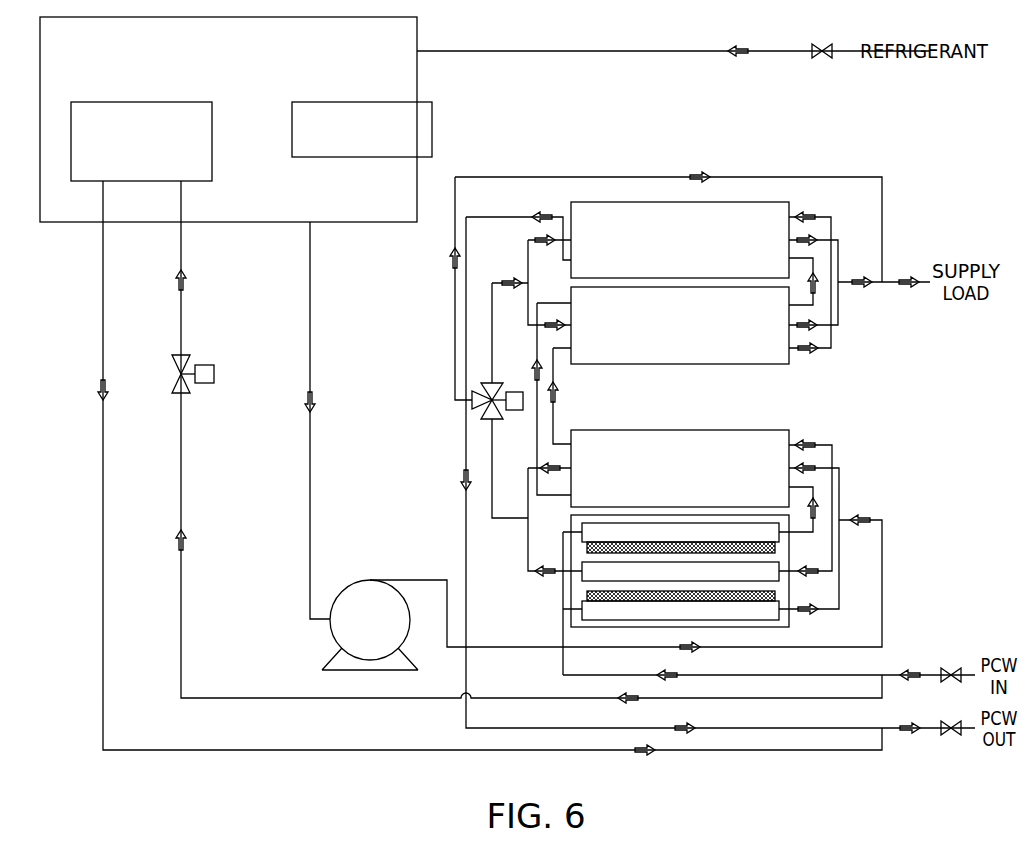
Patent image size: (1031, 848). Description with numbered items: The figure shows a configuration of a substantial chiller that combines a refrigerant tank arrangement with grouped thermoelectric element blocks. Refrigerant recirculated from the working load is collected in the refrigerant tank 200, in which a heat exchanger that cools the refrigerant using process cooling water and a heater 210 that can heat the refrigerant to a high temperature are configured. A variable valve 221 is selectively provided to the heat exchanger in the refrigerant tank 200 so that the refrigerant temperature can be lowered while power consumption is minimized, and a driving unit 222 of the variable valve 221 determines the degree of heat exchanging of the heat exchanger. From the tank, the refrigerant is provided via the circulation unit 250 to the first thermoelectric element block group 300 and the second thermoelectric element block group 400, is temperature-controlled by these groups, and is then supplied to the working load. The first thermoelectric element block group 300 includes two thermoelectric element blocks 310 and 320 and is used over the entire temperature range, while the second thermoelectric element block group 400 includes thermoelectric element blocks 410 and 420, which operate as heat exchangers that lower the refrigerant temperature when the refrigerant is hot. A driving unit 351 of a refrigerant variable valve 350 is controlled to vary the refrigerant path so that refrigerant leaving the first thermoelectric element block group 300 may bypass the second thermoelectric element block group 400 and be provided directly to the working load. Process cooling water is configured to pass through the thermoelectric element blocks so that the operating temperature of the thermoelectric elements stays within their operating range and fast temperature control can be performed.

The refrigerant tank 200 is at (417, 75).
The heater 210 is at (432, 132).
The thermoelectric element block 420 is at (197, 181).
The variable valve 221 is at (190, 390).
The driving unit 222 is at (207, 365).
The circulation unit 250 is at (372, 580).
The refrigerant variable valve 350 is at (472, 402).
The driving unit 351 is at (517, 392).
The second thermoelectric element block group 400 is at (705, 348).
The thermoelectric element block 410 is at (640, 364).
The thermoelectric element block 320 is at (752, 430).
The thermoelectric element block 310 is at (571, 593).
The first thermoelectric element block group 300 is at (728, 532).